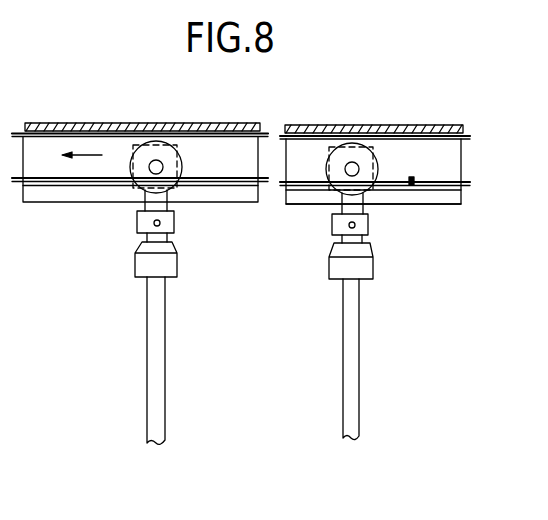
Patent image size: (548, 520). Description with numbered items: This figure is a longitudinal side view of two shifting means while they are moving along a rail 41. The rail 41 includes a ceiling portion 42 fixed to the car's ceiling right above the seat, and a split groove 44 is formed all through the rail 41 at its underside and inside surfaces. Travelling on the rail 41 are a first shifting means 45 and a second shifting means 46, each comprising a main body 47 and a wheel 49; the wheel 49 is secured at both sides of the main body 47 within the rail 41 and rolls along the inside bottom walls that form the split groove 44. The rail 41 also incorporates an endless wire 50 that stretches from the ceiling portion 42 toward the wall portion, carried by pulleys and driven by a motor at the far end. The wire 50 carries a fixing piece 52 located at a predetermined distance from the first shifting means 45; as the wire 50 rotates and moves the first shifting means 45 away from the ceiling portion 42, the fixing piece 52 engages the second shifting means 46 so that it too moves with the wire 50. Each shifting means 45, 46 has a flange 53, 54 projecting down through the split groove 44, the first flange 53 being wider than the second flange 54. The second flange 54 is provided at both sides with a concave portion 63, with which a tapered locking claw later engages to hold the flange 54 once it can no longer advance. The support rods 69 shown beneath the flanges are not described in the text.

The rail 41 is at (398, 121).
The ceiling portion 42 is at (237, 120).
The split groove 44 is at (440, 196).
The first shifting means 45 is at (124, 234).
The second shifting means 46 is at (376, 238).
The main body 47 is at (143, 152).
The wheel 49 is at (163, 160).
The endless wire 50 is at (42, 133).
The fixing piece 52 is at (415, 179).
The first flange 53 is at (143, 227).
The second flange 54 is at (372, 221).
The concave portion 63 is at (160, 224).
The support rod 69 is at (155, 388).